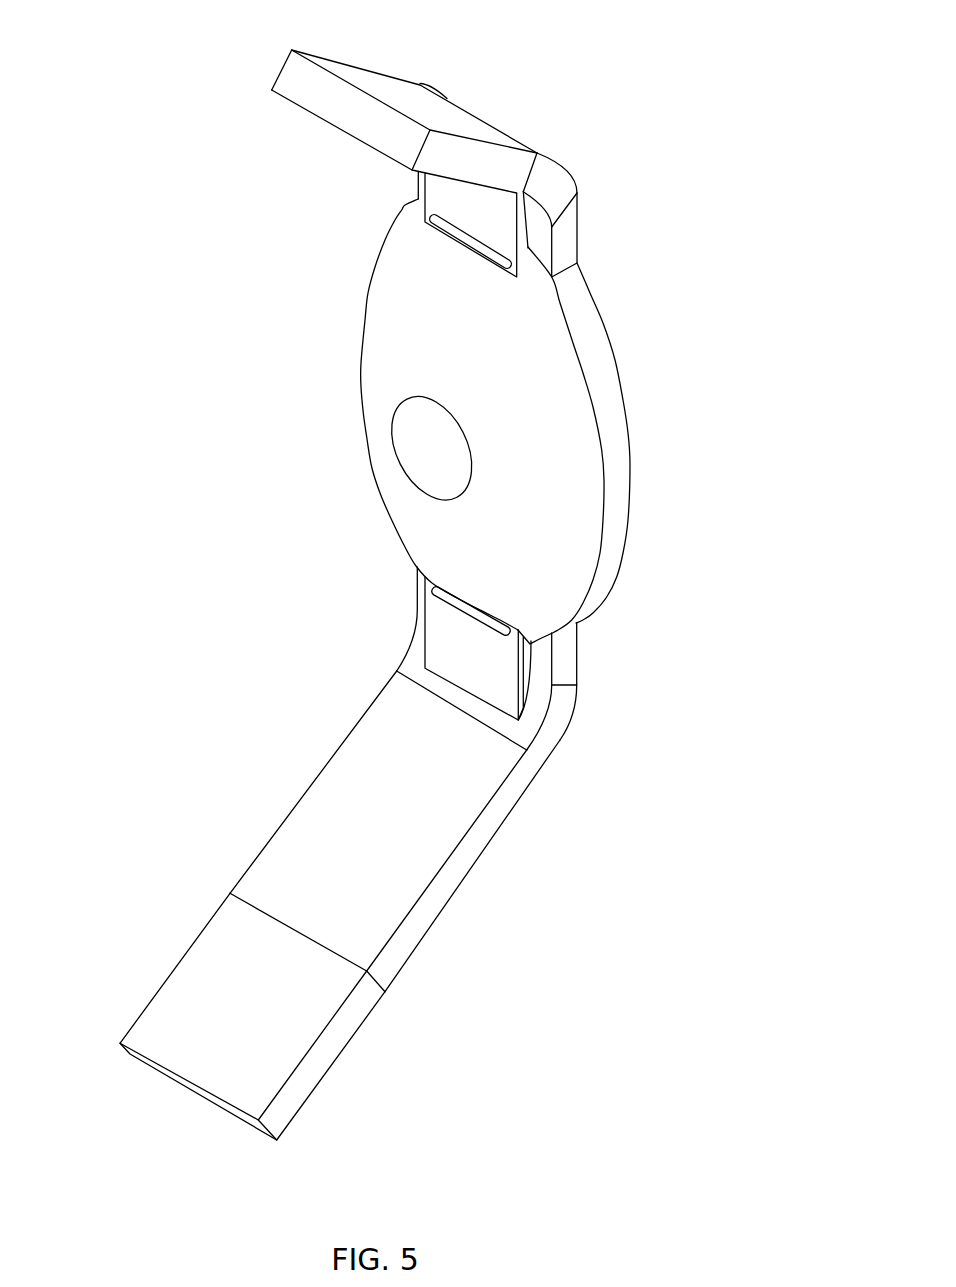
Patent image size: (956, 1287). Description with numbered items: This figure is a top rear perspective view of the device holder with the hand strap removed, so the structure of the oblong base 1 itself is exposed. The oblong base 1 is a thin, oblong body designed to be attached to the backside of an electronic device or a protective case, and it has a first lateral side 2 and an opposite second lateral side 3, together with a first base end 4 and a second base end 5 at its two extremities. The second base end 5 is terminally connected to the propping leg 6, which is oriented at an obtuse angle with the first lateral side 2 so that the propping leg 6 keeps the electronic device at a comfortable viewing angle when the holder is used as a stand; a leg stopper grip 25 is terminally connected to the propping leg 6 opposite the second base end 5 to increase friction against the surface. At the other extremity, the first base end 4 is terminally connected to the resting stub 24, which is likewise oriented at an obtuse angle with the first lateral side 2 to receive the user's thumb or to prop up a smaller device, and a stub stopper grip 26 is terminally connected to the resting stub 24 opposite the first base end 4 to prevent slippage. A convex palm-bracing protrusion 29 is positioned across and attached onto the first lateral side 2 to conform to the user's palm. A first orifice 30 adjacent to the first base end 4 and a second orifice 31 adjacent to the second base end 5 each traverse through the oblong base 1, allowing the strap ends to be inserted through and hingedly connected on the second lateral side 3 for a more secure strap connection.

The oblong base 1 is at (686, 412).
The first lateral side 2 is at (538, 257).
The second lateral side 3 is at (631, 469).
The first base end 4 is at (566, 237).
The second base end 5 is at (563, 653).
The propping leg 6 is at (467, 860).
The resting stub 24 is at (557, 180).
The leg stopper grip 25 is at (187, 970).
The stub stopper grip 26 is at (357, 70).
The palm-bracing protrusion 29 is at (373, 363).
The first orifice 30 is at (457, 233).
The second orifice 31 is at (487, 623).